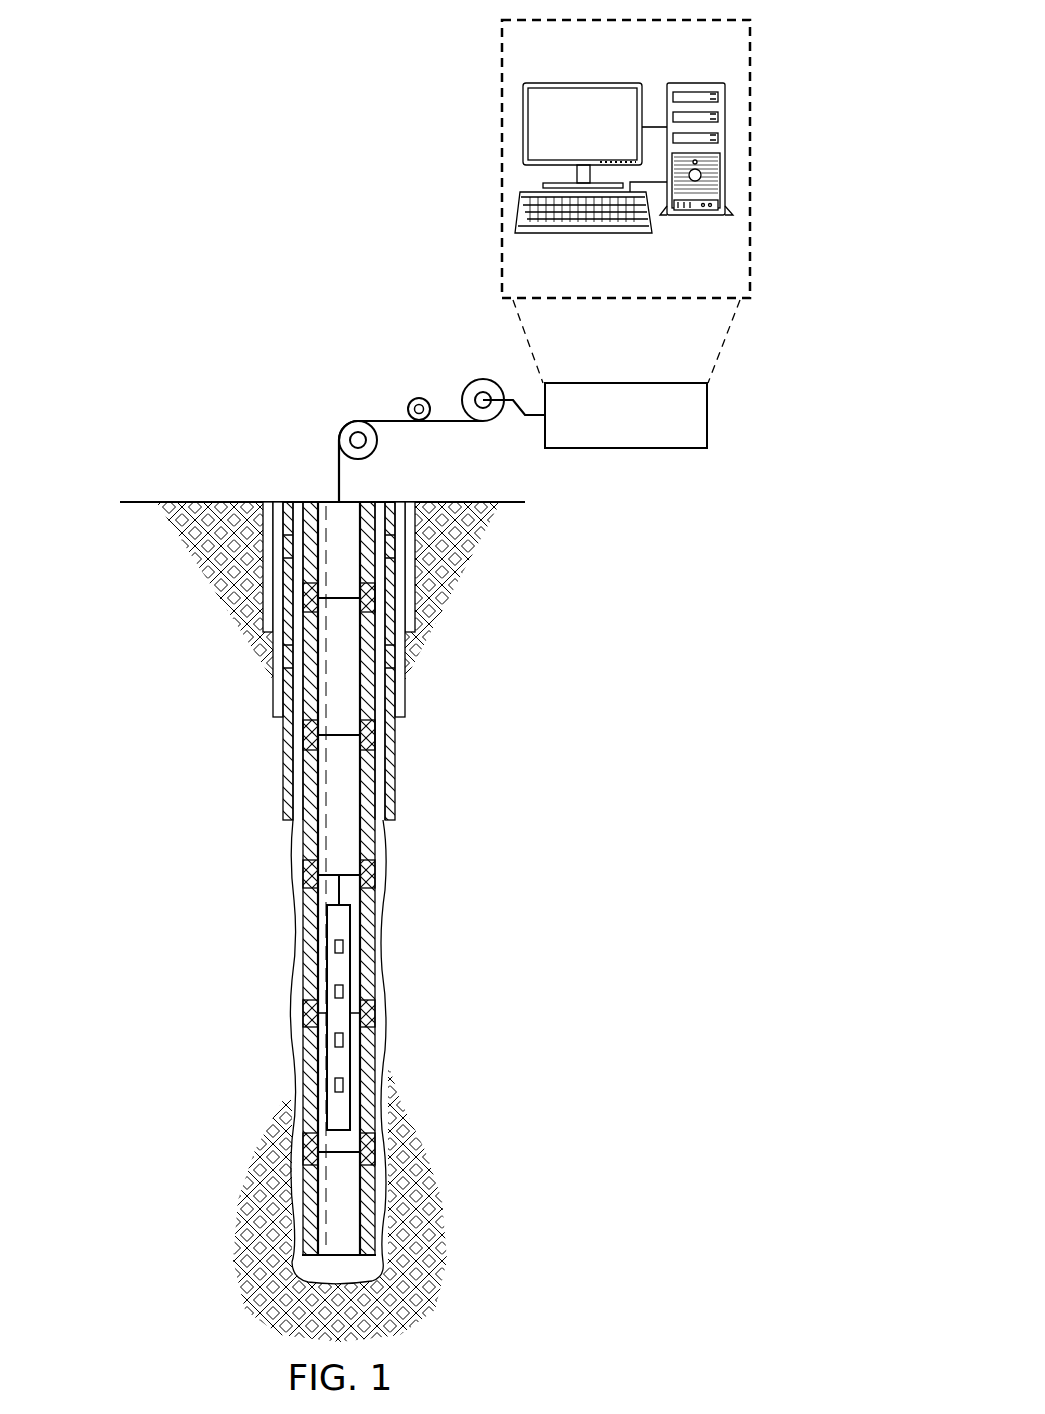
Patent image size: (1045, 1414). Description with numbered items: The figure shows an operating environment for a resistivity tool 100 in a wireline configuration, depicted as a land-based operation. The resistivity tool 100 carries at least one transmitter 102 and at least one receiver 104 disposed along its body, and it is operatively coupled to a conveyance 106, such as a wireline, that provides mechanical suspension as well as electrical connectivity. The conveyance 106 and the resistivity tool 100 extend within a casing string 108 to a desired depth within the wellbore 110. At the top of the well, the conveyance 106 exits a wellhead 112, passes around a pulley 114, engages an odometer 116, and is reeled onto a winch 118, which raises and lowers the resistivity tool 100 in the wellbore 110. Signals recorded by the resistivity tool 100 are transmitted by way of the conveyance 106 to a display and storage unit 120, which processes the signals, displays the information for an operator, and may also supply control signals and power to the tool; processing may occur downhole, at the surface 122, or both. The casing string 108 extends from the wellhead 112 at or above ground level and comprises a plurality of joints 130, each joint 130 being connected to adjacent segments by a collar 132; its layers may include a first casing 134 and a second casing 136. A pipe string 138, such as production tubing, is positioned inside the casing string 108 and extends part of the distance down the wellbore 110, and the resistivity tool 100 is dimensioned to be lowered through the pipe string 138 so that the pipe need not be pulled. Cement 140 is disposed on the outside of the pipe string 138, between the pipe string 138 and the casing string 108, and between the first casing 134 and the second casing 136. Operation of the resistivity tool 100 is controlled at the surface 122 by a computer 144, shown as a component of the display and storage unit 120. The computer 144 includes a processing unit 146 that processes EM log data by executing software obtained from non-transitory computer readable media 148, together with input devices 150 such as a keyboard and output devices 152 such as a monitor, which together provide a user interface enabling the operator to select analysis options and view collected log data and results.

The resistivity tool 100 is at (326, 1049).
The transmitter 102 is at (334, 991).
The receiver 104 is at (344, 945).
The conveyance 106 is at (342, 490).
The casing string 108 is at (252, 697).
The wellbore 110 is at (383, 793).
The wellhead 112 is at (324, 494).
The pulley 114 is at (345, 422).
The odometer 116 is at (410, 400).
The winch 118 is at (470, 381).
The display and storage unit 120 is at (708, 425).
The surface 122 is at (210, 499).
The joint 130 is at (283, 728).
The collar 132 is at (284, 772).
The first casing 134 is at (393, 733).
The second casing 136 is at (401, 688).
The pipe string 138 is at (311, 1185).
The cement 140 is at (380, 912).
The computer 144 is at (752, 107).
The processing unit 146 is at (699, 217).
The non-transitory computer readable media 148 is at (700, 82).
The input device 150 is at (596, 236).
The output device 152 is at (578, 82).